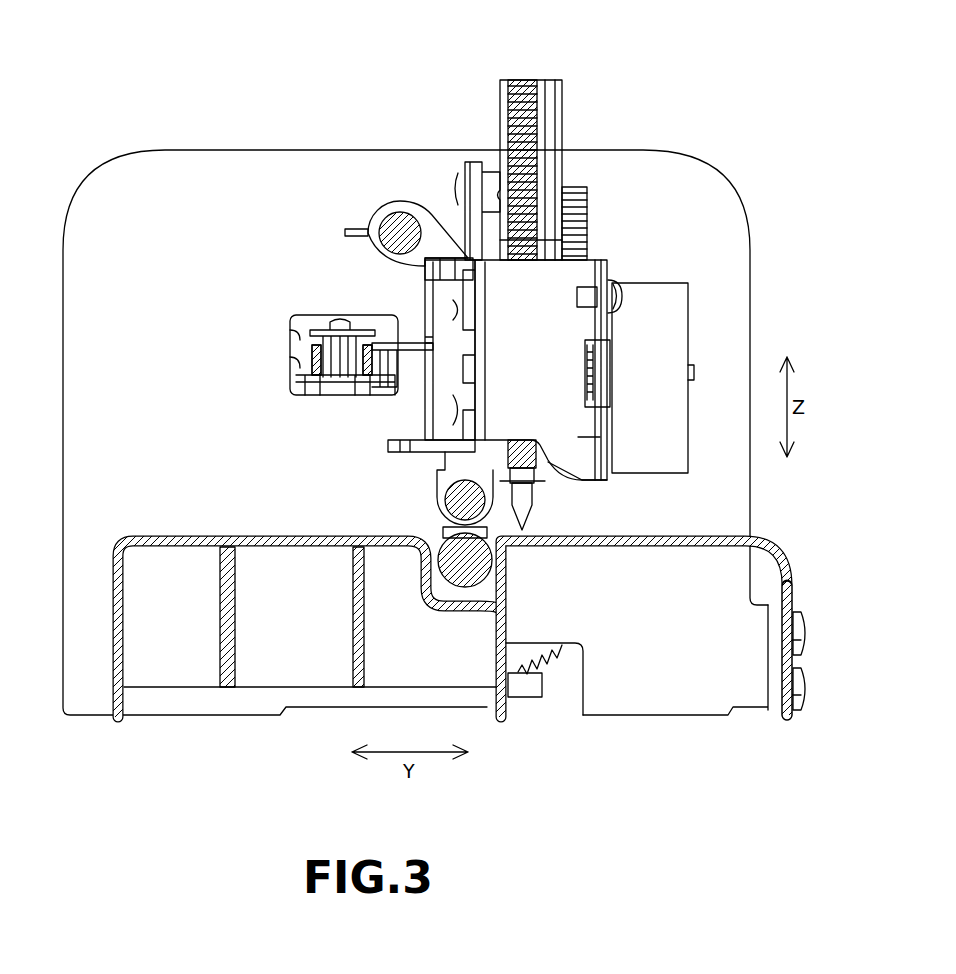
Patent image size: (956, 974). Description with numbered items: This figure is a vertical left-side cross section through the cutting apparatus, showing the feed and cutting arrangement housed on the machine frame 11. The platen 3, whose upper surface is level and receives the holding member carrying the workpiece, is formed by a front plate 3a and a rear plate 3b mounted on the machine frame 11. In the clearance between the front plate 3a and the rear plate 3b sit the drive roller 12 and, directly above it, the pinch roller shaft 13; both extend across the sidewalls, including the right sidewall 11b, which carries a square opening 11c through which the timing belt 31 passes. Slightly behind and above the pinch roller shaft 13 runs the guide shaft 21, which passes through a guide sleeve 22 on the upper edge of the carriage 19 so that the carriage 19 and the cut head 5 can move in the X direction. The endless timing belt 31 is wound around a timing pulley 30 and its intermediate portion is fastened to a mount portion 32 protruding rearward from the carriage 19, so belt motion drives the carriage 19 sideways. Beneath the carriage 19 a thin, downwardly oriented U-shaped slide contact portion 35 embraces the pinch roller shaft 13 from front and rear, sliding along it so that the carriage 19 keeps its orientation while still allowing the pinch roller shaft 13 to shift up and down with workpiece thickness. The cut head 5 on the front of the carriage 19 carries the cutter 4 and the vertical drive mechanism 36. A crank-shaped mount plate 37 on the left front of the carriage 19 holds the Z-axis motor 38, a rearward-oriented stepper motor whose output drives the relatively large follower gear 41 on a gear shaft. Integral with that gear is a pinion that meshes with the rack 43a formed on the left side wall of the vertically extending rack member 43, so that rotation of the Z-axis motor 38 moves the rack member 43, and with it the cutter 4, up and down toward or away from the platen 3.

The platen 3 is at (478, 487).
The front plate 3a is at (722, 535).
The rear plate 3b is at (210, 535).
The cutter 4 is at (527, 515).
The cut head 5 is at (672, 228).
The machine frame 11 is at (775, 703).
The right sidewall 11b is at (180, 172).
The square opening 11c is at (303, 320).
The drive roller 12 is at (480, 567).
The pinch roller shaft 13 is at (450, 515).
The carriage 19 is at (455, 260).
The guide shaft 21 is at (373, 227).
The guide sleeve 22 is at (400, 202).
The timing pulley 30 is at (332, 367).
The timing belt 31 is at (370, 347).
The mount portion 32 is at (358, 345).
The slide contact portion 35 is at (445, 478).
The vertical drive mechanism 36 is at (653, 270).
The mount plate 37 is at (578, 437).
The Z-axis motor 38 is at (675, 330).
The follower gear 41 is at (587, 197).
The rack member 43 is at (558, 115).
The rack 43a is at (530, 80).